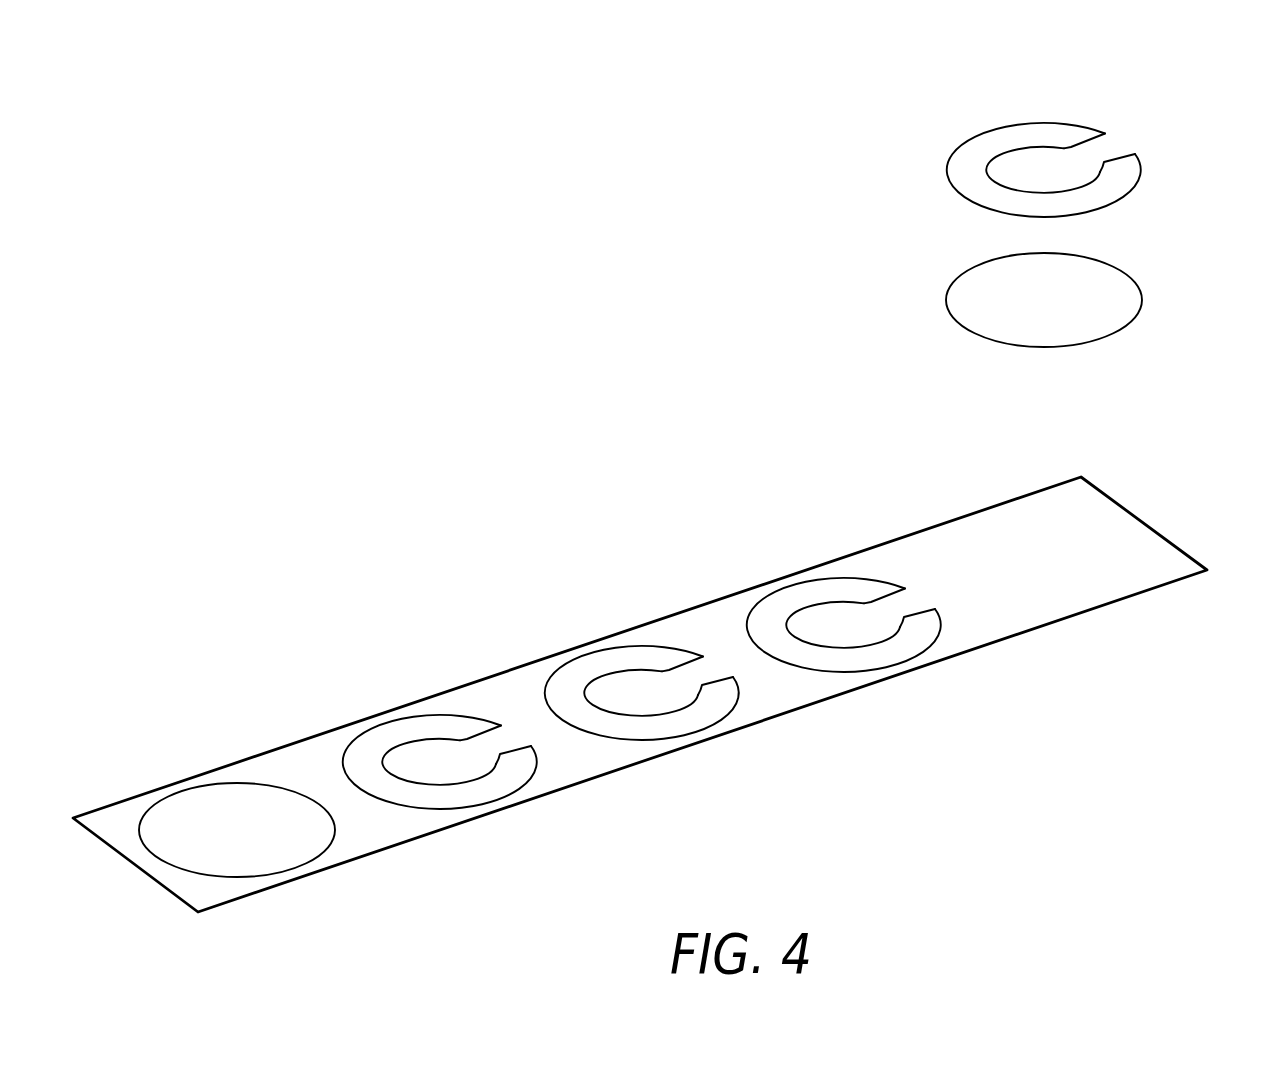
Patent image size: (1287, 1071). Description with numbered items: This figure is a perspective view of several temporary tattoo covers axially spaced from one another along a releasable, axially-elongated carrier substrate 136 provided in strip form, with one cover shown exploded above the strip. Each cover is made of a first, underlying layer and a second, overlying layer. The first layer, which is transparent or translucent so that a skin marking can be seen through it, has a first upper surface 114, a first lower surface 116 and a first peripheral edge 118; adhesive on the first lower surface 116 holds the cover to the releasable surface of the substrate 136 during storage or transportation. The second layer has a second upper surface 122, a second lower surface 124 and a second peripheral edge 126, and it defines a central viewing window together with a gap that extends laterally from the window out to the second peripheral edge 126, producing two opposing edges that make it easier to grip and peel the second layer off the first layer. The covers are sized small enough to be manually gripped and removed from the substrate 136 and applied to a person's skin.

The first upper surface 114 is at (1087, 263).
The first lower surface 116 is at (1075, 348).
The first peripheral edge 118 is at (1142, 300).
The second upper surface 122 is at (1042, 103).
The second lower surface 124 is at (1011, 170).
The second peripheral edge 126 is at (1157, 188).
The axially-elongated substrate 136 is at (1142, 535).